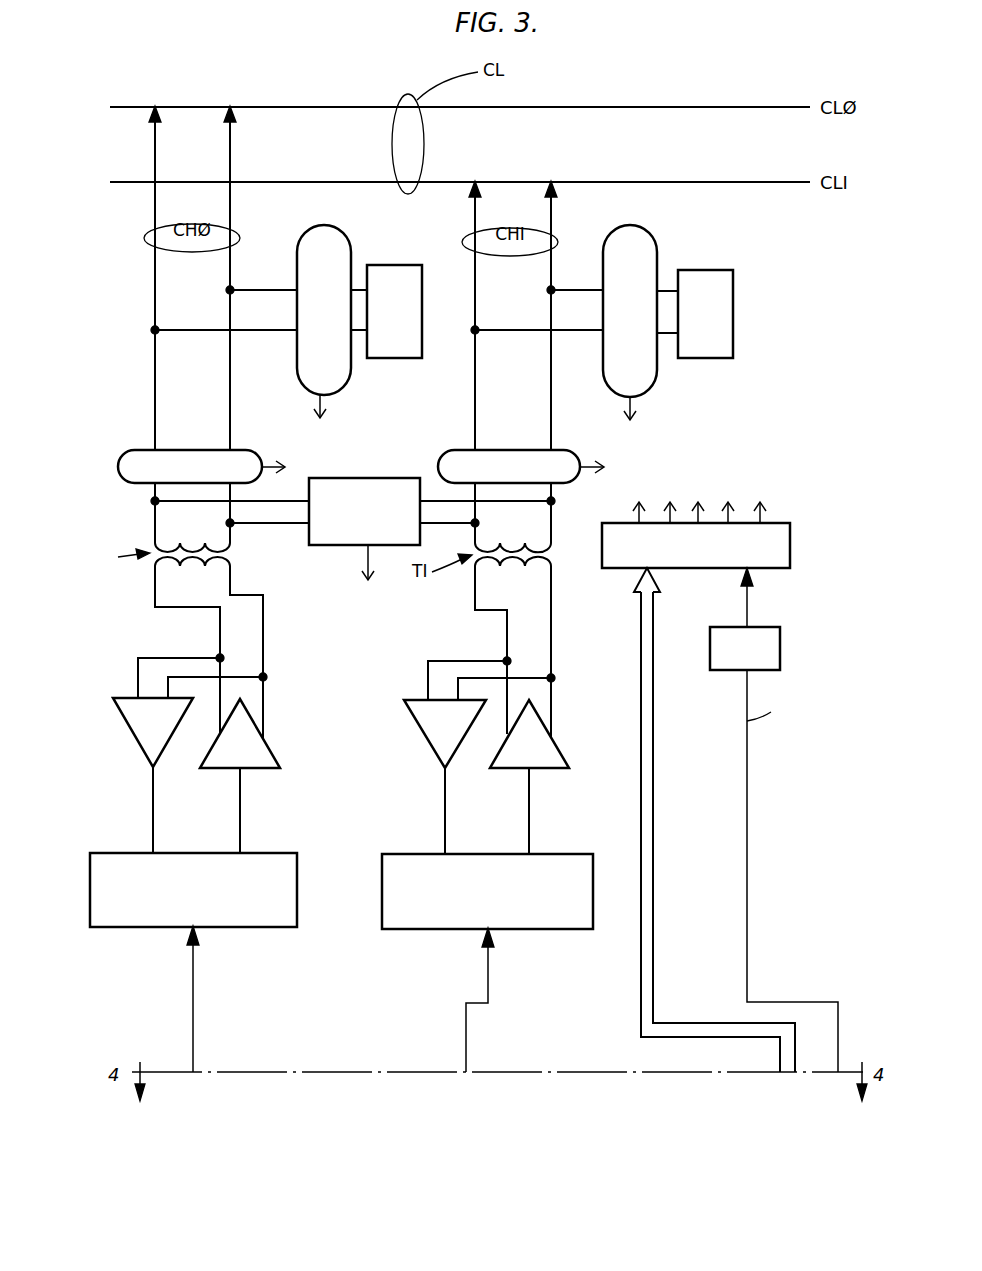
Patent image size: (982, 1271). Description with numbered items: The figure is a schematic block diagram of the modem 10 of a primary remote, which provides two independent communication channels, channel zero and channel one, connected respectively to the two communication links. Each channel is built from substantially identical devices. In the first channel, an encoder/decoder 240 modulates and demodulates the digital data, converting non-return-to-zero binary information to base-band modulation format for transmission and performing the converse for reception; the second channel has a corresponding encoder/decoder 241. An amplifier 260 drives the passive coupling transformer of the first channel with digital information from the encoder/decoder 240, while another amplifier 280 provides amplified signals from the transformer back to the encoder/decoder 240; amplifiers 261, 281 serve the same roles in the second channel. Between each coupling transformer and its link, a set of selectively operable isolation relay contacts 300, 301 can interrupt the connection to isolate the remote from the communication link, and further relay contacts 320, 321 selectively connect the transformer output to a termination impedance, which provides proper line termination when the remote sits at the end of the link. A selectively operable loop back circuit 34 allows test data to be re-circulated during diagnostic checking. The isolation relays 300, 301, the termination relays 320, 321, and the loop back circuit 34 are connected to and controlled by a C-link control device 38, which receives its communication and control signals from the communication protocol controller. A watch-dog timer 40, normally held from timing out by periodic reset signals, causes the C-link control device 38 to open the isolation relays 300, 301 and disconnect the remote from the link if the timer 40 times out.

The modem 10 is at (88, 608).
The encoder/decoder 240 is at (280, 852).
The encoder/decoder 241 is at (565, 853).
The amplifier 260 is at (267, 747).
The amplifier 261 is at (553, 745).
The amplifier 280 is at (128, 735).
The amplifier 281 is at (428, 738).
The relay contacts 300 is at (123, 439).
The relay contacts 301 is at (447, 440).
The relay contacts 320 is at (346, 240).
The relay contacts 321 is at (652, 240).
The loop back circuit 34 is at (357, 478).
The C-link control device 38 is at (602, 541).
The watch-dog timer 40 is at (780, 650).